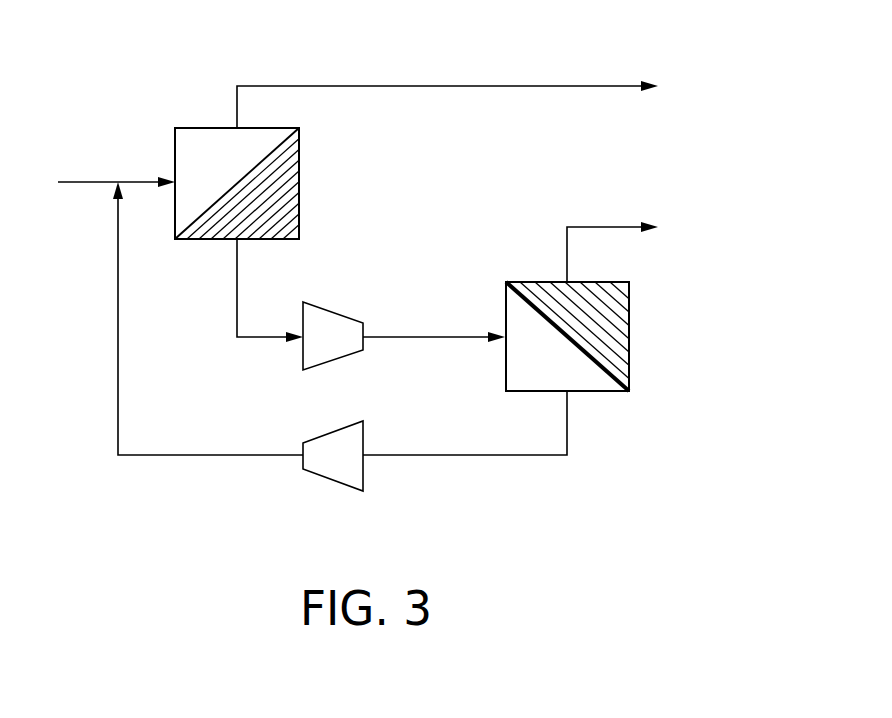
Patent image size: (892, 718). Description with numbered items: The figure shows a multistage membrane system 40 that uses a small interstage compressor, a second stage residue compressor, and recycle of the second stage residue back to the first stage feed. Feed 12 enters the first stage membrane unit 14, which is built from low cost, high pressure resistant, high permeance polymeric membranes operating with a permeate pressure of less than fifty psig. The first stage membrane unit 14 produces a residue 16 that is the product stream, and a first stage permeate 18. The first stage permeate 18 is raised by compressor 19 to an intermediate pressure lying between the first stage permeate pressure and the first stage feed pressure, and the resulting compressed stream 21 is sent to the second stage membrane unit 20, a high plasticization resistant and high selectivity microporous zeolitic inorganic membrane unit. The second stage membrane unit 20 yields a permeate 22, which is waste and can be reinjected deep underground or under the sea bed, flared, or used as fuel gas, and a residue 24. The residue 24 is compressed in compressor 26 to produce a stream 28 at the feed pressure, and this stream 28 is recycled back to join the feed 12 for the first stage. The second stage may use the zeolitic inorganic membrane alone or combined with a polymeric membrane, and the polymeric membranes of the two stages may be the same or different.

The multistage membrane system 40 is at (128, 45).
The feed 12 is at (86, 182).
The first stage membrane unit 14 is at (299, 182).
The residue 16 is at (447, 86).
The first stage permeate 18 is at (237, 269).
The compressor 19 is at (342, 312).
The second stage membrane unit 20 is at (629, 336).
The compressed stream 21 is at (433, 337).
The permeate 22 is at (612, 227).
The residue 24 is at (481, 456).
The compressor 26 is at (333, 481).
The stream 28 is at (118, 377).